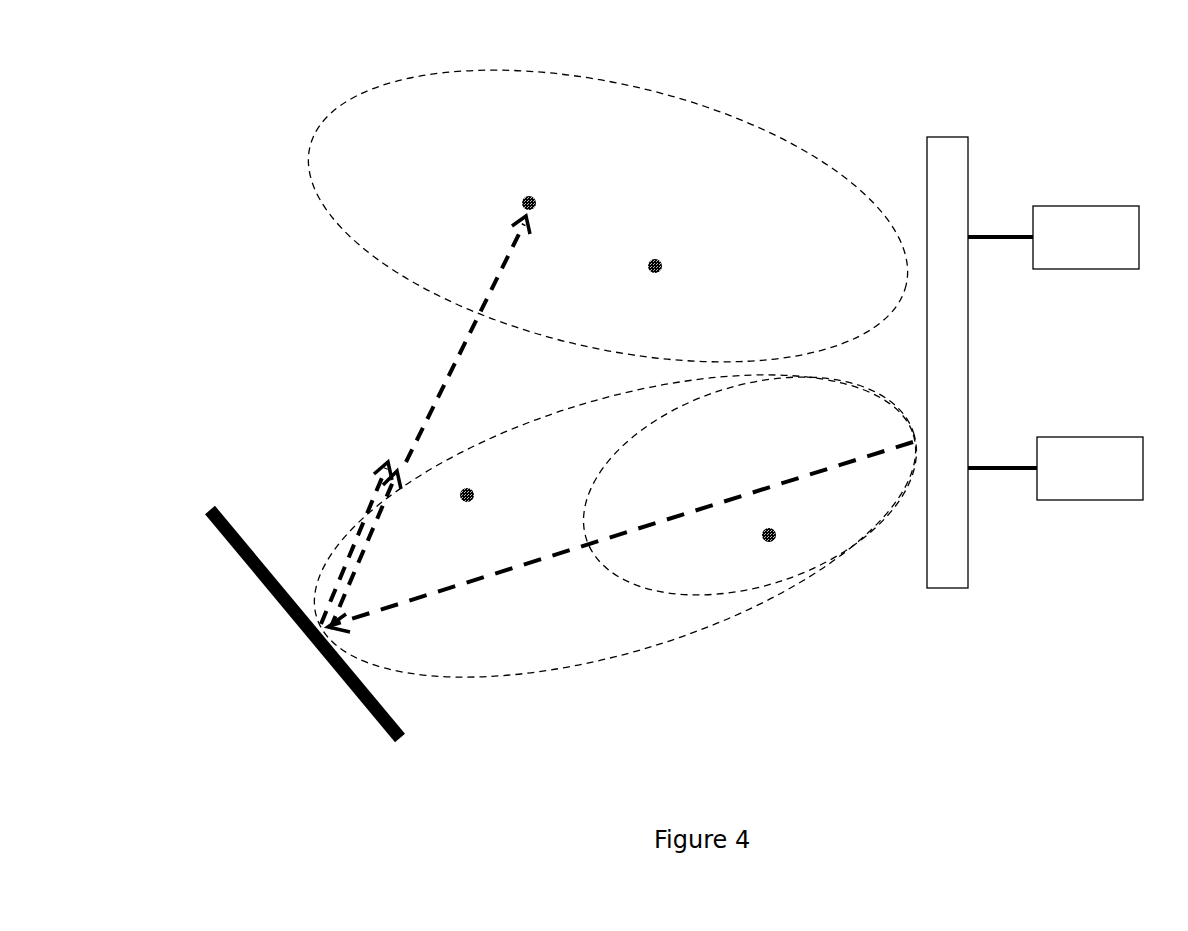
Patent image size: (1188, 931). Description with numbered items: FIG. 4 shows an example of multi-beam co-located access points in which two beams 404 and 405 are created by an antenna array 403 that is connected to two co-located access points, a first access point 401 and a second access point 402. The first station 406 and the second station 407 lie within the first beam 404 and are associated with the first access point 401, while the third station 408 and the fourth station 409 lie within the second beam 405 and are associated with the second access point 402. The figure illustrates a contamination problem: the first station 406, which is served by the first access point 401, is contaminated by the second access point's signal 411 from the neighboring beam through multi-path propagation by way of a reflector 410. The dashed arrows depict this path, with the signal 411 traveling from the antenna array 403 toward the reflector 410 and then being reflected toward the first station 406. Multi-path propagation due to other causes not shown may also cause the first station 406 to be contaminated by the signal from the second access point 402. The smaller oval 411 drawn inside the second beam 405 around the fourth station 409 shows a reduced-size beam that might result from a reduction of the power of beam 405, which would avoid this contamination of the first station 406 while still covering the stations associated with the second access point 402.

The AP1 401 is at (1114, 200).
The AP2 402 is at (1116, 432).
The antenna array 403 is at (956, 134).
The beam 404 is at (661, 94).
The beam 405 is at (578, 670).
The Station 1 406 is at (448, 176).
The Station 2 407 is at (681, 289).
The Station 3 408 is at (492, 513).
The Station 4 409 is at (716, 552).
The reflector 410 is at (322, 675).
The AP2's signal 411 is at (446, 359).